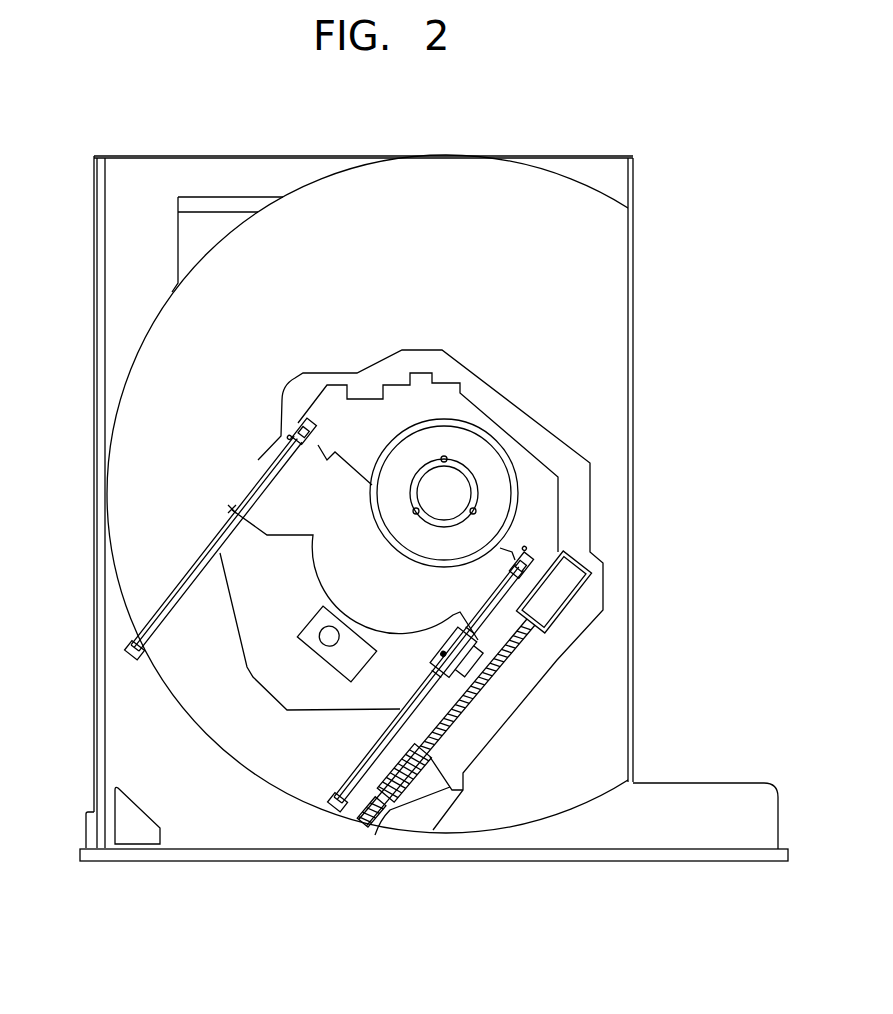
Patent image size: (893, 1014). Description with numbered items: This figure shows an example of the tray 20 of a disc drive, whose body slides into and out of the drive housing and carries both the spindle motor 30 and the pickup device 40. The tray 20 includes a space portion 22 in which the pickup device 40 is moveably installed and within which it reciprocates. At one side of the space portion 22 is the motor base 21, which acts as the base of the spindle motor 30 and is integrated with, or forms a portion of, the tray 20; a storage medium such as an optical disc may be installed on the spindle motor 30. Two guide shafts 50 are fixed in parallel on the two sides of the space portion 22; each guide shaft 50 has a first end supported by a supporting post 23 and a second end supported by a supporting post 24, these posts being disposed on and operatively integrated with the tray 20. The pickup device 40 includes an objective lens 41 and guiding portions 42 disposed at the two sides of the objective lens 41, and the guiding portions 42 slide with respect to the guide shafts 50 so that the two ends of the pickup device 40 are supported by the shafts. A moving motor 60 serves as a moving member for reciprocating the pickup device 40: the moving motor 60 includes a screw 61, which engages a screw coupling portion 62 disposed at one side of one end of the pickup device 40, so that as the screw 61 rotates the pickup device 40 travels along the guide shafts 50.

The tray 20 is at (745, 793).
The motor base 21 is at (376, 444).
The space portion 22 is at (258, 730).
The supporting post 23 is at (152, 648).
The supporting post 24 is at (300, 432).
The spindle motor 30 is at (463, 483).
The pickup device 40 is at (290, 548).
The objective lens 41 is at (332, 635).
The guiding portions 42 is at (232, 510).
The guide shafts 50 is at (192, 578).
The moving motor 60 is at (582, 573).
The screw 61 is at (440, 783).
The screw coupling portion 62 is at (445, 680).